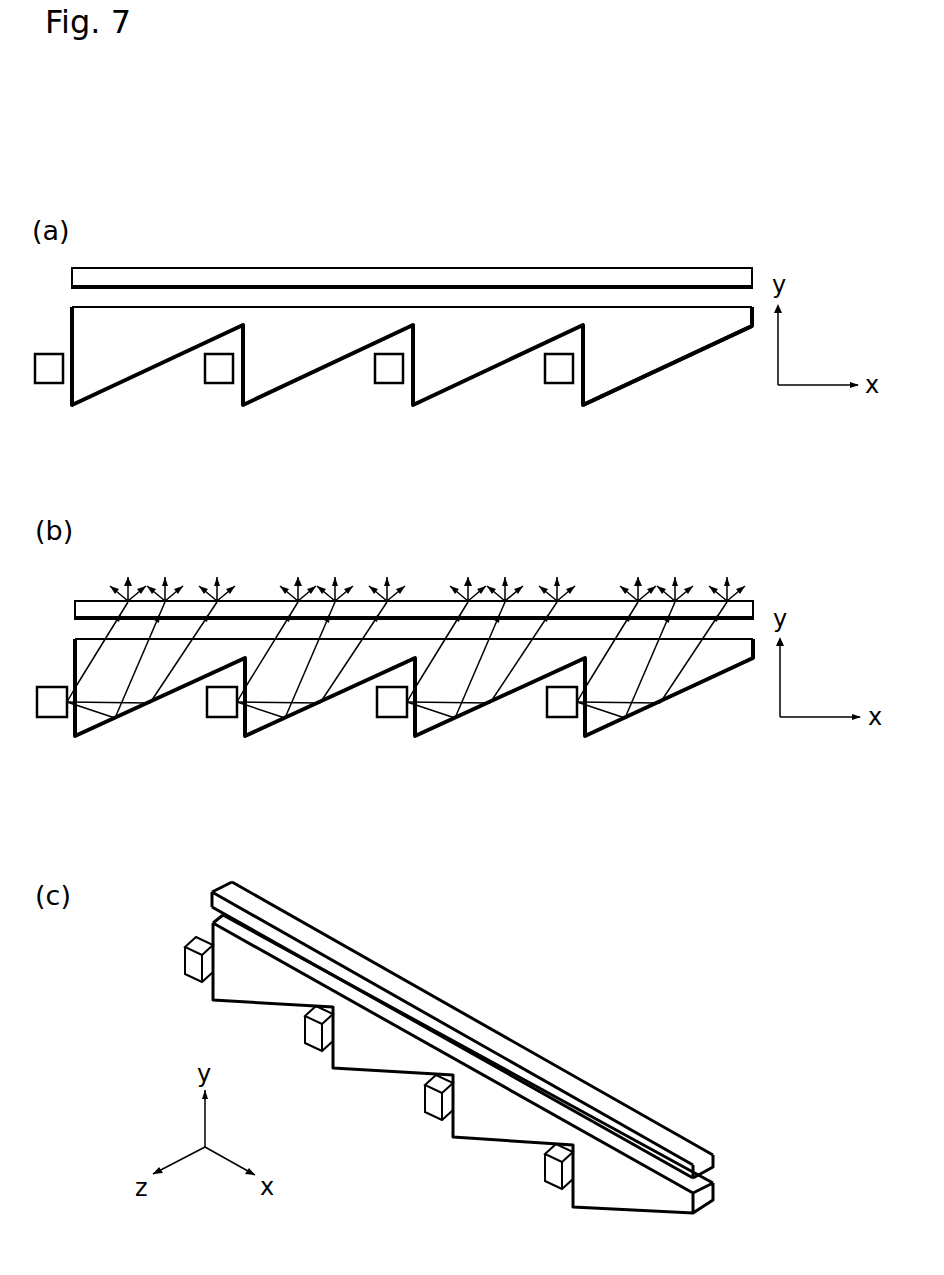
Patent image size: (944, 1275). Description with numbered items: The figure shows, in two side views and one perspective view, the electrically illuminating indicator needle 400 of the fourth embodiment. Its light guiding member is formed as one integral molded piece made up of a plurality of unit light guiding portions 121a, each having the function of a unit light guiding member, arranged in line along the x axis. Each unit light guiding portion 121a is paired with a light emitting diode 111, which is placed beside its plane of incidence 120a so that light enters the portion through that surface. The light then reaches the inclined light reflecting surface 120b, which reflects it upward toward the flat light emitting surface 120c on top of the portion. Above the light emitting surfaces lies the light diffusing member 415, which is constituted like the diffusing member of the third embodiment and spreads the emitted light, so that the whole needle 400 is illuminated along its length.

The electrically illuminating indicator needle 400 is at (726, 243).
The light diffusing member 415 is at (487, 273).
The light emitting diode 111 is at (47, 384).
The unit light guiding portion 121a is at (122, 362).
The plane of incidence 120a is at (597, 363).
The light reflecting surface 120b is at (637, 362).
The light emitting surface 120c is at (628, 314).